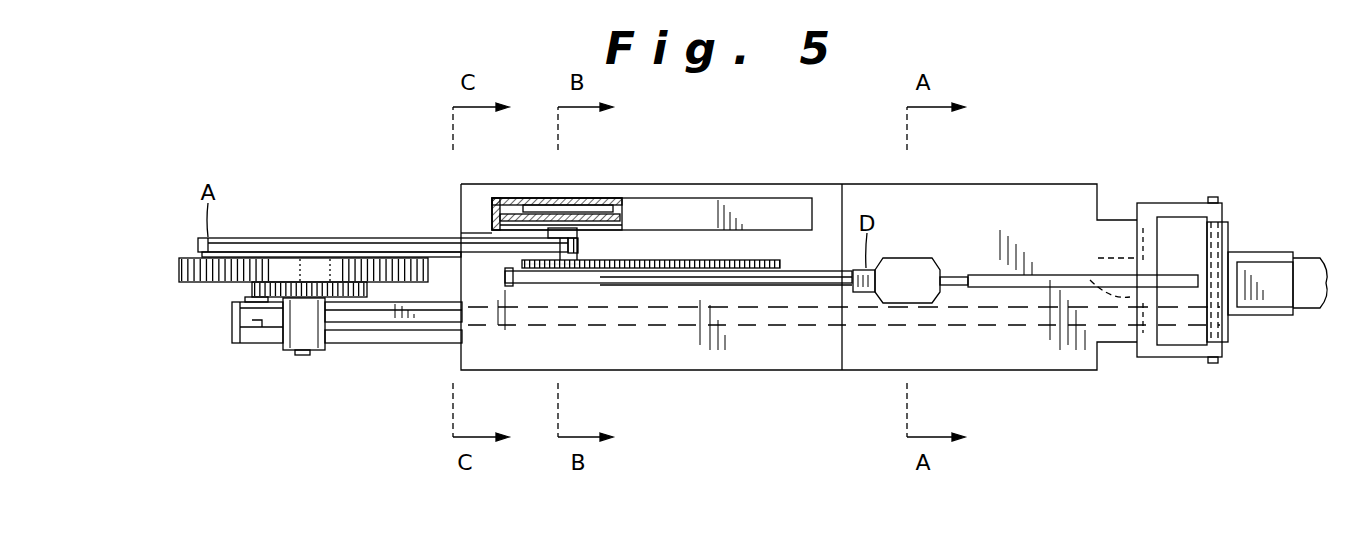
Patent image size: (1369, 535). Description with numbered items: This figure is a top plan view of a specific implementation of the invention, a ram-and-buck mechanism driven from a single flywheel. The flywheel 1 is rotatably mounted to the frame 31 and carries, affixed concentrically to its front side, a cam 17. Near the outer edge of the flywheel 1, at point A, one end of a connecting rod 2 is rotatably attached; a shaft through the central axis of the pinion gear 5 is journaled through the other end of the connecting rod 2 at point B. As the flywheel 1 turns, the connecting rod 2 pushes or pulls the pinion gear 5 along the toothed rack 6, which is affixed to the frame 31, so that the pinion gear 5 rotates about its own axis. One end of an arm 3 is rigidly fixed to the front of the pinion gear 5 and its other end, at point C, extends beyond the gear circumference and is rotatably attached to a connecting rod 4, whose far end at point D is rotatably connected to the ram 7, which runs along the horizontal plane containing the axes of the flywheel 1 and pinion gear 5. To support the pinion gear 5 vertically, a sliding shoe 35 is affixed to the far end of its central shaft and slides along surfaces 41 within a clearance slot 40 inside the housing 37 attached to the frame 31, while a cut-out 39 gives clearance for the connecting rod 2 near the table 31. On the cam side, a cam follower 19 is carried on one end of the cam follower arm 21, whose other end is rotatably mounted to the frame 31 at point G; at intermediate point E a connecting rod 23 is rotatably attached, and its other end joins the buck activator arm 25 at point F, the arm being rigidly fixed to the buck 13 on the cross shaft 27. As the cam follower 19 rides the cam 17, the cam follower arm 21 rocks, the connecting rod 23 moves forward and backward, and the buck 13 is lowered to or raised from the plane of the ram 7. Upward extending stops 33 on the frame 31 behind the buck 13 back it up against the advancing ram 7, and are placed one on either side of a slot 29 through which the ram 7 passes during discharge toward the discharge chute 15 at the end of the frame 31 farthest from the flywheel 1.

The flywheel 1 is at (181, 270).
The connecting rod 2 is at (365, 240).
The arm 3 is at (505, 273).
The connecting rod 4 is at (790, 280).
The pinion gear 5 is at (573, 268).
The toothed rack 6 is at (683, 262).
The ram 7 is at (905, 258).
The buck 13 is at (1145, 205).
The discharge chute 15 is at (1270, 262).
The cam 17 is at (318, 290).
The cam follower 19 is at (252, 292).
The cam follower arm 21 is at (242, 302).
The connecting rod 23 is at (378, 312).
The buck activator arm 25 is at (1232, 330).
The cross shaft 27 is at (1215, 363).
The slot 29 is at (990, 275).
The frame 31 is at (683, 370).
The stops 33 is at (1102, 269).
The sliding shoe 35 is at (582, 198).
The housing 37 is at (680, 215).
The cut-out 39 is at (470, 233).
The clearance slot 40 is at (505, 200).
The surfaces 41 is at (600, 224).